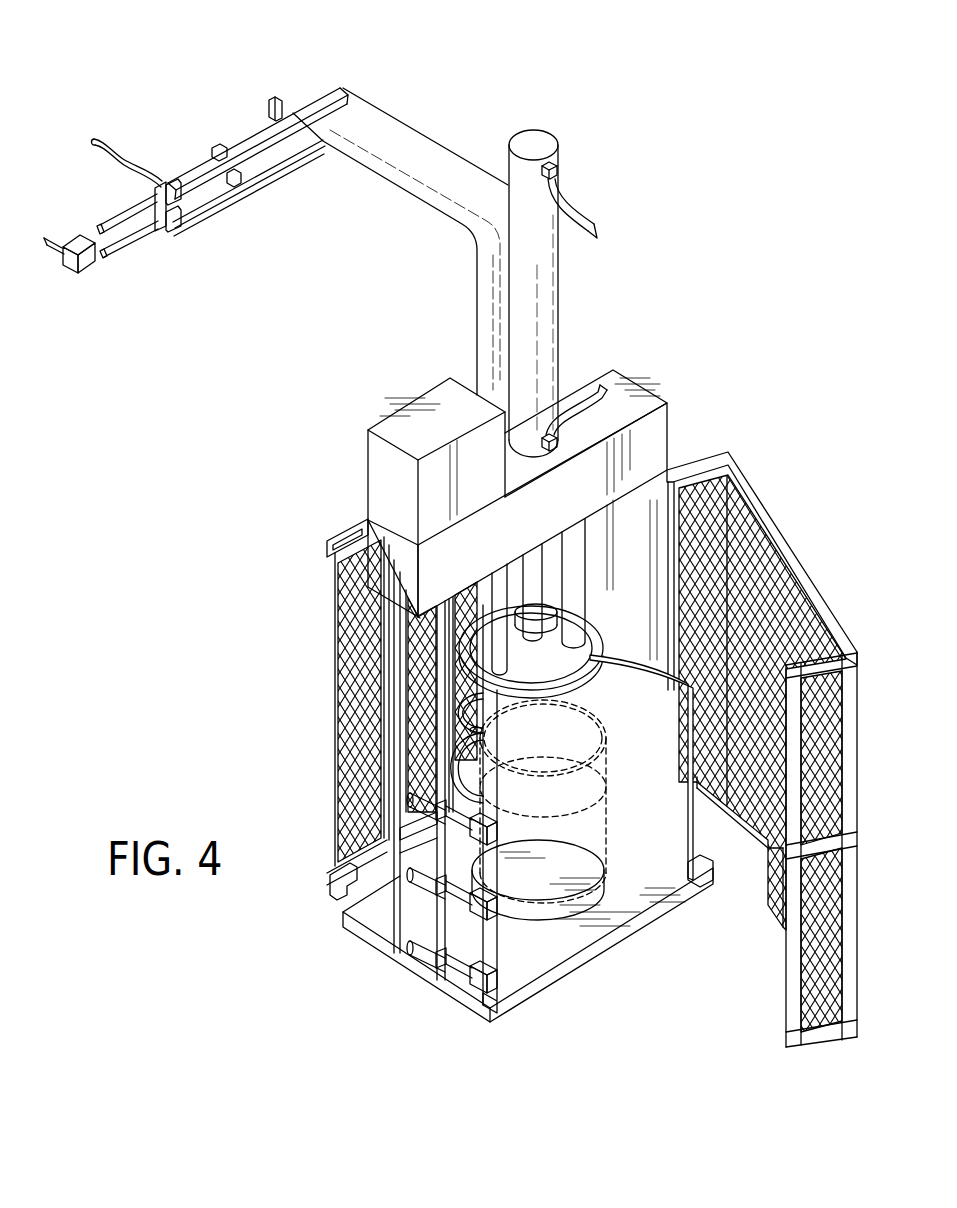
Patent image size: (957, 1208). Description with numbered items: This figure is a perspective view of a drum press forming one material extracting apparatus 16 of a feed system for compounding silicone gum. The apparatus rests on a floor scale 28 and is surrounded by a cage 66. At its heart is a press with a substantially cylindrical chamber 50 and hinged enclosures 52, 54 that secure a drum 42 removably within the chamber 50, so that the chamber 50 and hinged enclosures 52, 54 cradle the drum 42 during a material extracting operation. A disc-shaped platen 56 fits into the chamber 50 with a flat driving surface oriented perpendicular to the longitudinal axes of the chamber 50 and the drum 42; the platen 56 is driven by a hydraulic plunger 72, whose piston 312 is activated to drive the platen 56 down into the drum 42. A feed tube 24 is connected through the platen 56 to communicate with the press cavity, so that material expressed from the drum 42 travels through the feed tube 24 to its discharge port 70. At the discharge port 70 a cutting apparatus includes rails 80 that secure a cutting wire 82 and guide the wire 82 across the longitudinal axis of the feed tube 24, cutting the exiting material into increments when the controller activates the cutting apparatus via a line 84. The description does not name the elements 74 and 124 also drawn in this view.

The material extracting apparatus 16 is at (781, 664).
The feed tube 24 is at (413, 143).
The floor scale 28 is at (362, 952).
The drum 42 is at (608, 815).
The cylindrical chamber 50 is at (557, 833).
The hinged enclosure 52 is at (702, 813).
The hinged enclosure 54 is at (470, 943).
The disc-shaped platen 56 is at (567, 588).
The cage 66 is at (340, 620).
The discharge port 70 is at (324, 88).
The hydraulic plunger 72 is at (563, 310).
The cable 74 is at (596, 226).
The rails 80 is at (193, 195).
The cutting wire 82 is at (272, 96).
The line 84 is at (50, 238).
The mesh panel 124 is at (470, 640).
The piston 312 is at (535, 632).